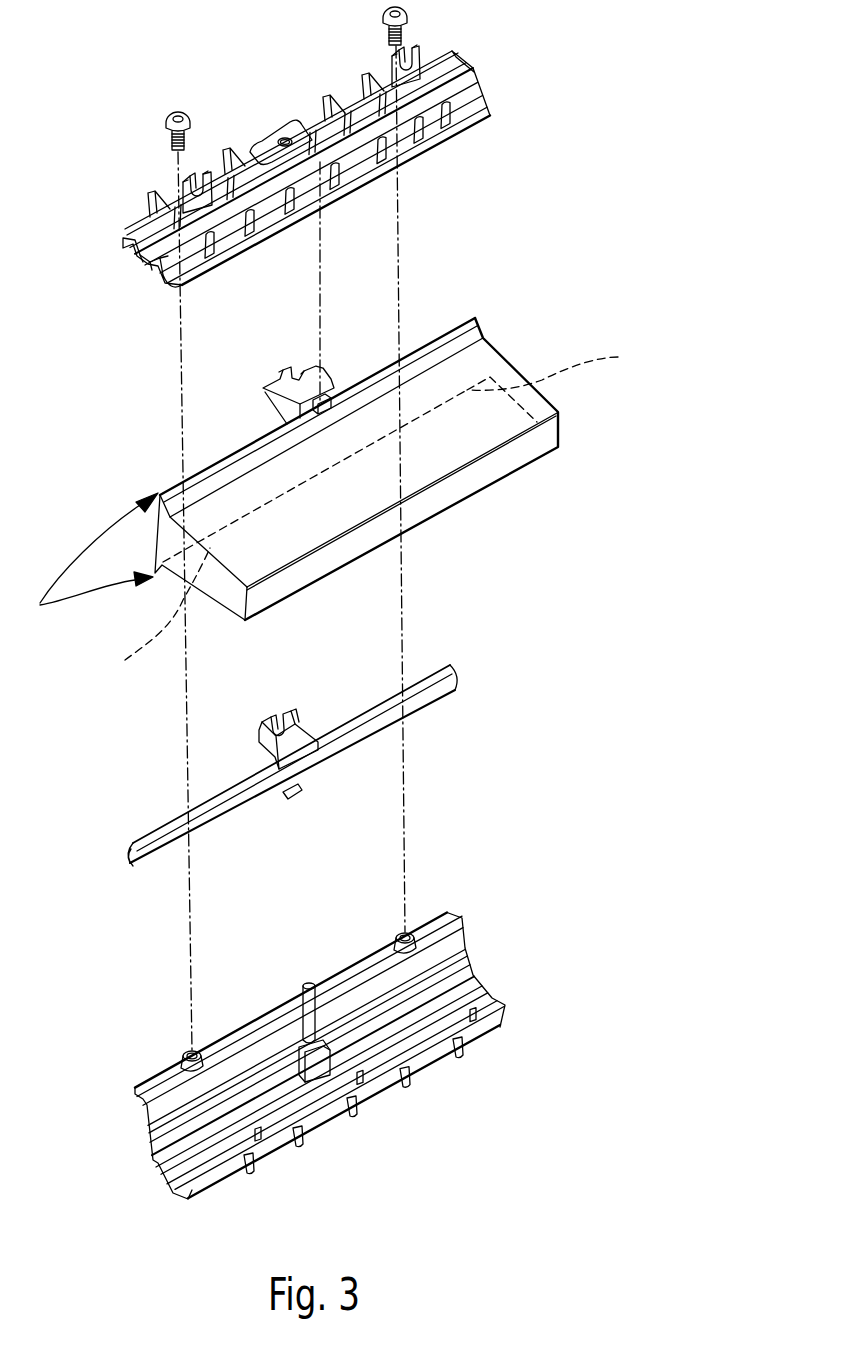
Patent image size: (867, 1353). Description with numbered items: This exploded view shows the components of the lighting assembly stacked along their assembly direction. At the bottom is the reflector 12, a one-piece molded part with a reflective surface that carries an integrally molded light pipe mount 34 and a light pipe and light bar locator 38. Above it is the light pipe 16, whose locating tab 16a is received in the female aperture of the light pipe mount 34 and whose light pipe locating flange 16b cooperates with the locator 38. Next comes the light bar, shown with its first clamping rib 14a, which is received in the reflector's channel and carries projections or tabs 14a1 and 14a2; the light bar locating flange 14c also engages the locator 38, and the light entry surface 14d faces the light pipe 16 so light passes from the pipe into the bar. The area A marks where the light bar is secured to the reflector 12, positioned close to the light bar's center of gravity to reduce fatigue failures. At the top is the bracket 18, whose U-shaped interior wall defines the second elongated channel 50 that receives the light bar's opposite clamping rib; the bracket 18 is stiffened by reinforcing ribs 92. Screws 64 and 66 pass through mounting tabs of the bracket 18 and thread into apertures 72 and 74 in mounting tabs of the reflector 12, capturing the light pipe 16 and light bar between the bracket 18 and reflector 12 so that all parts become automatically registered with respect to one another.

The reflector 12 is at (483, 995).
The first clamping rib 14a is at (532, 465).
The projection or tab 14a1 is at (569, 381).
The projection or tab 14a2 is at (281, 542).
The light bar locating flange 14c is at (268, 385).
The light entry surface 14d is at (158, 494).
The light pipe 16 is at (456, 686).
The locating tab or projection 16a is at (301, 793).
The light pipe locating flange 16b is at (262, 732).
The bracket 18 is at (491, 116).
The light pipe mount 34 is at (322, 1080).
The light pipe and light bar locator 38 is at (316, 1002).
The second elongated channel 50 is at (159, 267).
The fastener or screw 64 is at (168, 122).
The fastener or screw 66 is at (409, 14).
The aperture 72 is at (185, 1057).
The aperture 74 is at (413, 937).
The reinforcing ribs 92 is at (362, 74).
The area A is at (89, 557).